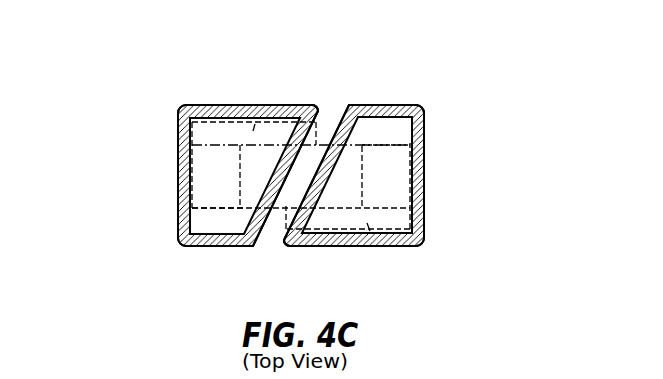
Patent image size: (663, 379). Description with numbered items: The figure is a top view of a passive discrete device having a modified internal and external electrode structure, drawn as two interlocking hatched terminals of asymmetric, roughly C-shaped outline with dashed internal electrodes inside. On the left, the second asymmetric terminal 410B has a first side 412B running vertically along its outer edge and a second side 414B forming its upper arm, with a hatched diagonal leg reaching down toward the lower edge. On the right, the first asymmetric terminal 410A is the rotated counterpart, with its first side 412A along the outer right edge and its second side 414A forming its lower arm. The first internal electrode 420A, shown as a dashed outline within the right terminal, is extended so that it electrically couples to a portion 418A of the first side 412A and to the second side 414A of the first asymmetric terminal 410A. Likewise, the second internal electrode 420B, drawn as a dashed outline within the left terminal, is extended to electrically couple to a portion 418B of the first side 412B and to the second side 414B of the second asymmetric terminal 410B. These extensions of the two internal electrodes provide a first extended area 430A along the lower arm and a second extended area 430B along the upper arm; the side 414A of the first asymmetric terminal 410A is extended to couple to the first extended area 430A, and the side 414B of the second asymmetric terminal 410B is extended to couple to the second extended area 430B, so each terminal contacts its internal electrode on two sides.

The first asymmetric terminal 410A is at (383, 105).
The second asymmetric terminal 410B is at (236, 246).
The first side 412A is at (485, 107).
The first side 412B is at (110, 107).
The second side 414A is at (417, 250).
The second side 414B is at (317, 72).
The portion 418A is at (427, 143).
The portion 418B is at (177, 108).
The first internal electrode 420A is at (392, 143).
The second internal electrode 420B is at (208, 208).
The first extended area 430A is at (388, 247).
The second extended area 430B is at (260, 106).